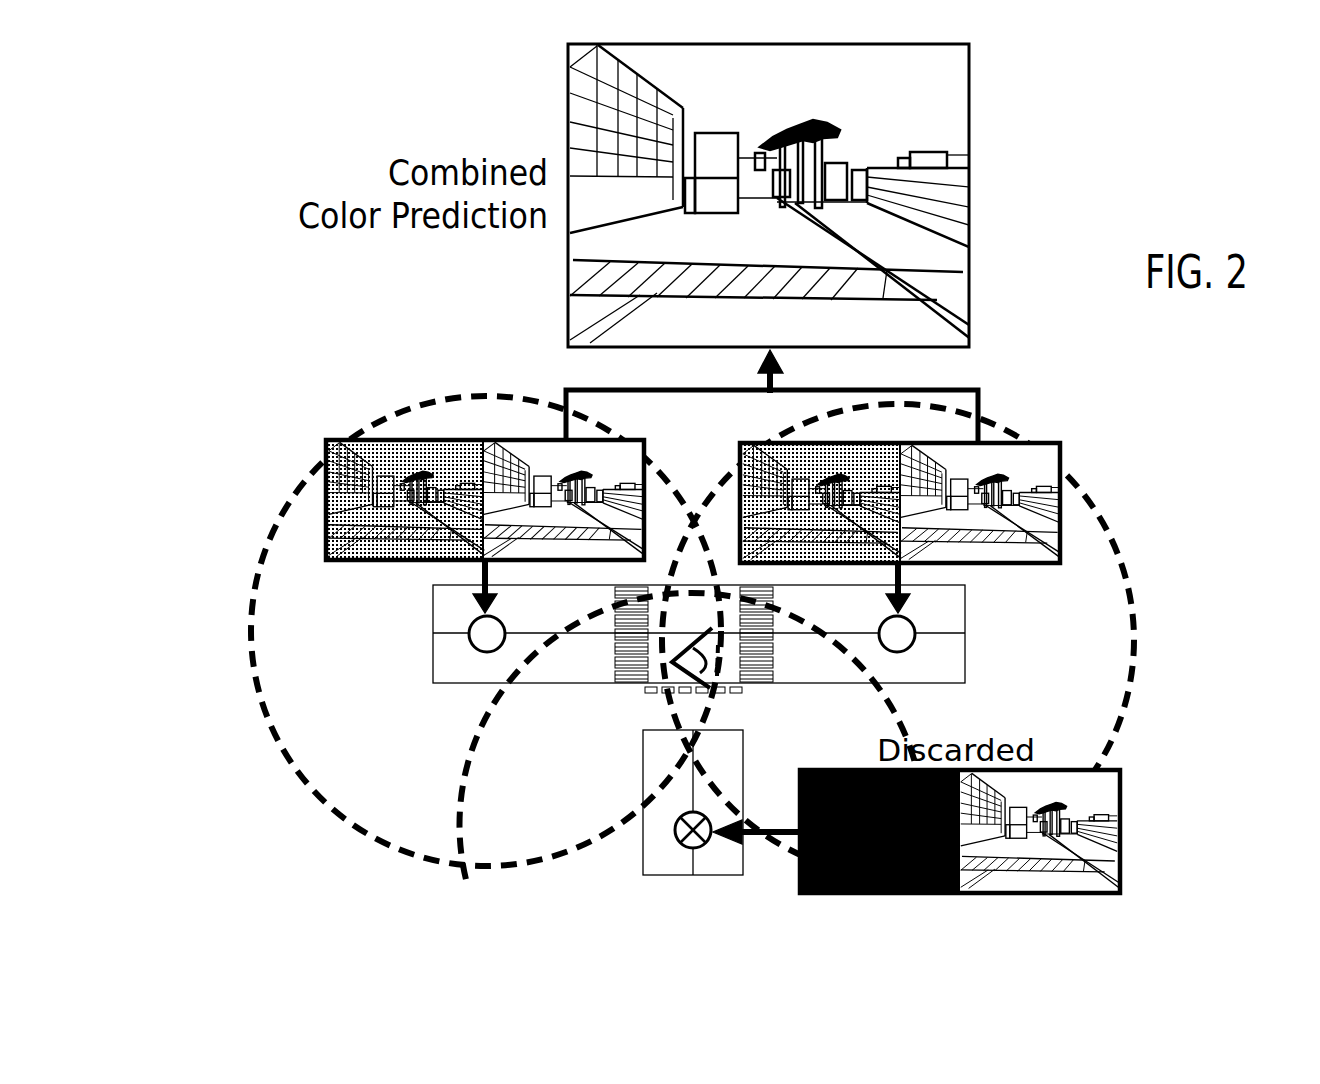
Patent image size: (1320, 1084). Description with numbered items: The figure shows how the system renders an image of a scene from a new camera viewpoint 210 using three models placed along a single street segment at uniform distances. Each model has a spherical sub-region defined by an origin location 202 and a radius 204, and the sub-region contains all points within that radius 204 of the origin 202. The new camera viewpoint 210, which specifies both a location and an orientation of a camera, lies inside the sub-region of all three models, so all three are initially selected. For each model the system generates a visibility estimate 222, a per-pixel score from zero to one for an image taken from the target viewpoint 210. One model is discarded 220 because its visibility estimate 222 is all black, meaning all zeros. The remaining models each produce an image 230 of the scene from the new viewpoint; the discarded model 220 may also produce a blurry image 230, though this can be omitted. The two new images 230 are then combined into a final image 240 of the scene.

The origin location 202 is at (460, 633).
The radius 204 is at (1133, 667).
The new camera viewpoint 210 is at (727, 651).
The discarded model 220 is at (668, 882).
The visibility estimate 222 is at (325, 500).
The image 230 is at (507, 455).
The final image 240 is at (970, 110).